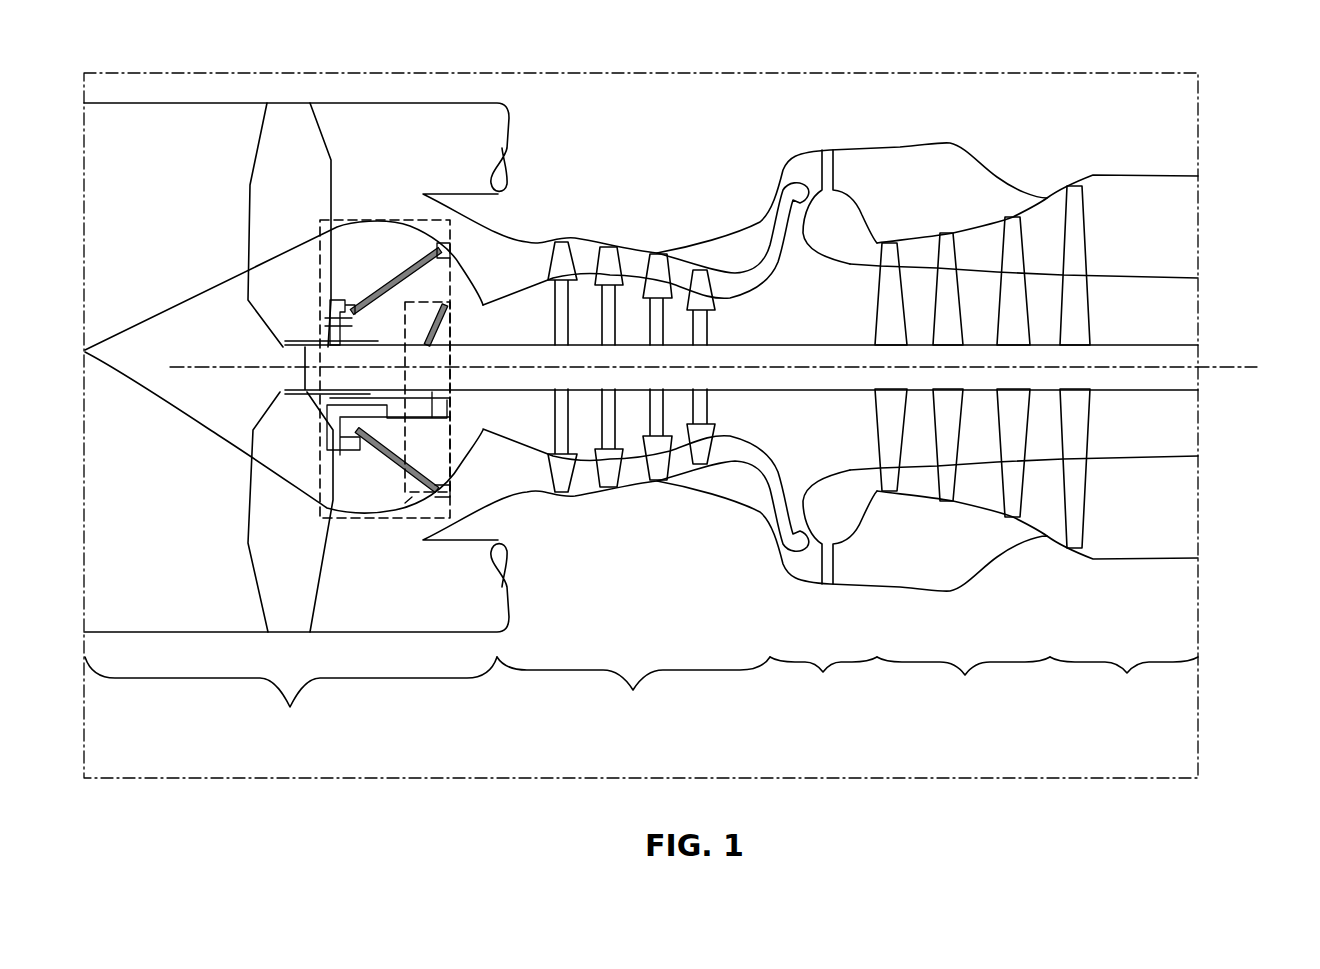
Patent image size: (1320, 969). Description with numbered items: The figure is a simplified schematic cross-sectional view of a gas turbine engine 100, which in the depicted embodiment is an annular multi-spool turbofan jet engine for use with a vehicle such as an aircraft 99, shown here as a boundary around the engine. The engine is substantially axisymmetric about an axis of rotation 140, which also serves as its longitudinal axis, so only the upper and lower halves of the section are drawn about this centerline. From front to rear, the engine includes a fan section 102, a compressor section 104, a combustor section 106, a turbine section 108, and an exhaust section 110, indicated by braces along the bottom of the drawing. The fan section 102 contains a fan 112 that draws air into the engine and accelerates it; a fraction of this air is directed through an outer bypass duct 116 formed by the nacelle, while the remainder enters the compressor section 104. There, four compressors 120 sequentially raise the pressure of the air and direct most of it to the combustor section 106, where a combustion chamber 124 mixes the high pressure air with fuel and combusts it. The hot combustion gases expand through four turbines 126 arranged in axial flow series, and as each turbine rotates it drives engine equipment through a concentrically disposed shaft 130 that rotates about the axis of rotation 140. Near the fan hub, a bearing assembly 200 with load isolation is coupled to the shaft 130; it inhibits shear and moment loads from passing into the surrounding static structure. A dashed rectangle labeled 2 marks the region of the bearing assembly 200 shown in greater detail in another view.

The aircraft 99 is at (1125, 73).
The gas turbine engine 100 is at (641, 364).
The fan section 102 is at (286, 709).
The compressor section 104 is at (633, 692).
The combustor section 106 is at (823, 674).
The turbine section 108 is at (965, 677).
The exhaust section 110 is at (1127, 675).
The fan 112 is at (246, 508).
The outer bypass duct 116 is at (492, 132).
The compressors 120 is at (556, 446).
The combustion chamber 124 is at (848, 199).
The turbines 126 is at (936, 477).
The shaft 130 is at (806, 345).
The axis of rotation 140 is at (1256, 367).
The detail region shown in FIG. 2 is at (362, 220).
The bearing assembly 200 is at (339, 302).